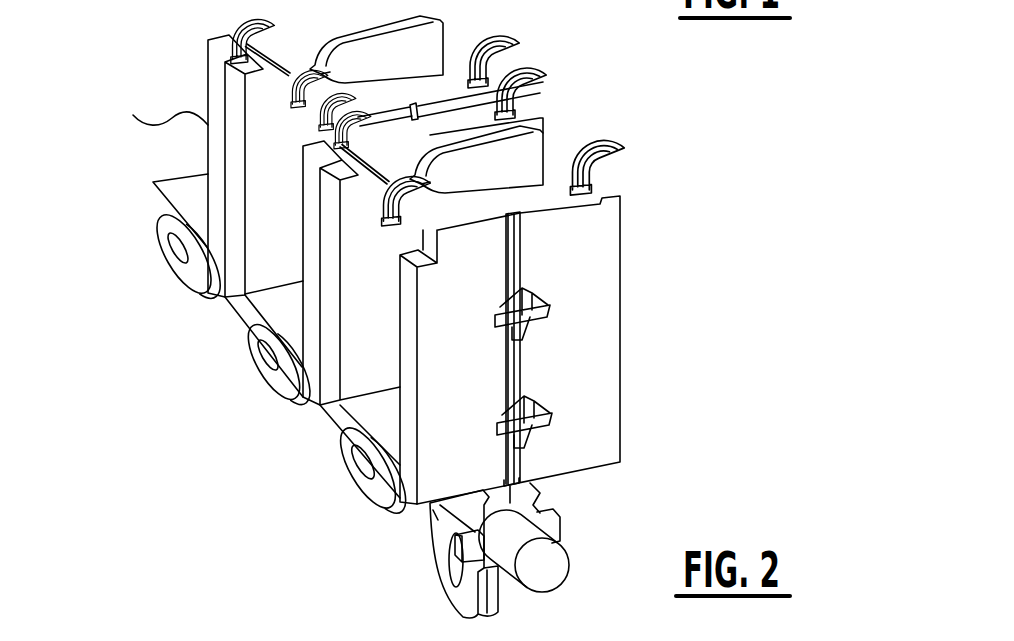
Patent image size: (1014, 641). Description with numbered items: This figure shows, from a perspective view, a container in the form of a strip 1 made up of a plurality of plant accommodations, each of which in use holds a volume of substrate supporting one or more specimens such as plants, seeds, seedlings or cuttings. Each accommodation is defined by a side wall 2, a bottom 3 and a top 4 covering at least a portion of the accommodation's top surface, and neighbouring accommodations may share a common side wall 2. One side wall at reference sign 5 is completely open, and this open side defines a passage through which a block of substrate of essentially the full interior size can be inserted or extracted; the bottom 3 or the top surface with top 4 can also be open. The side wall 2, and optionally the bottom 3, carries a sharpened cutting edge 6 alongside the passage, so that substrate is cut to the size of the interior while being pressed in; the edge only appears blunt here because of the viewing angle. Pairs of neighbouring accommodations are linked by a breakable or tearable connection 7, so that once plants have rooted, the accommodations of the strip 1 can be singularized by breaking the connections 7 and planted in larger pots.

The strip 1 is at (676, 130).
The side wall 2 is at (583, 457).
The bottom 3 is at (372, 414).
The top 4 is at (560, 192).
The open side wall 5 is at (254, 187).
The cutting edge 6 is at (207, 125).
The breakable connection 7 is at (438, 91).